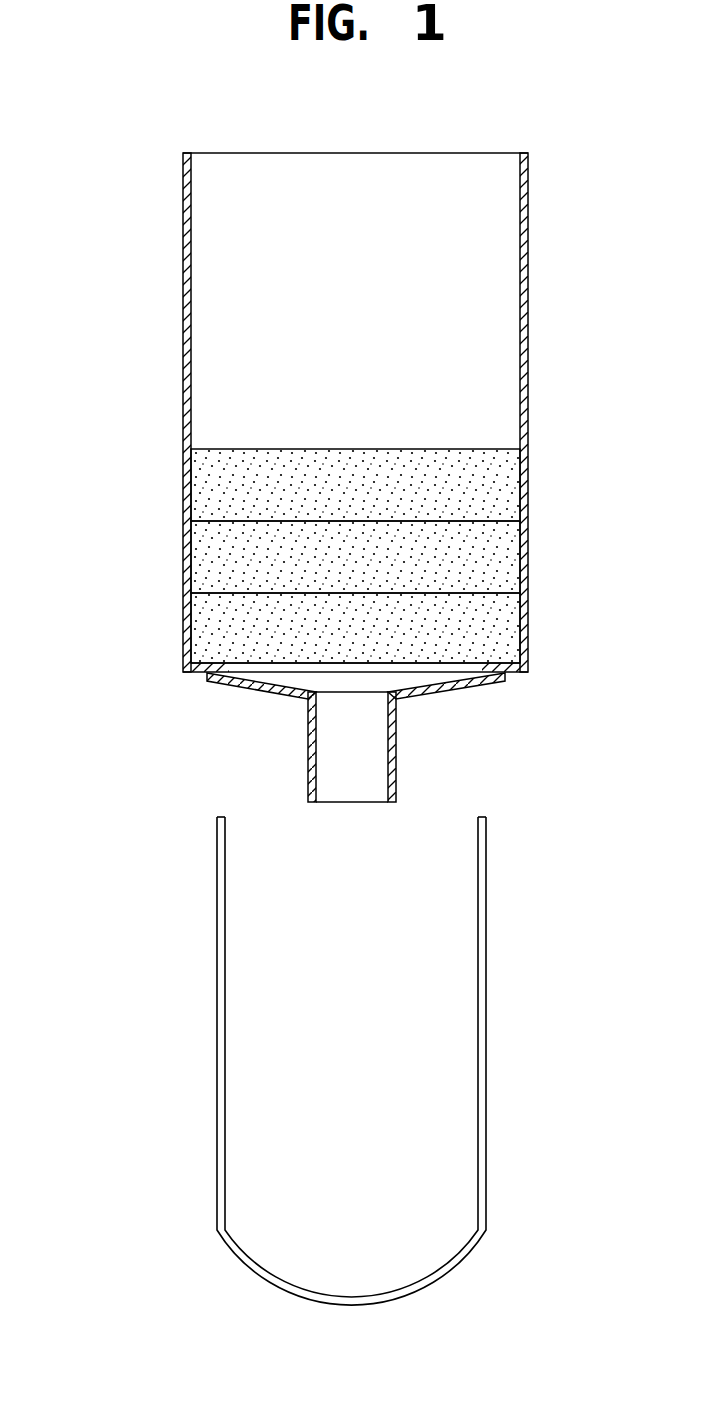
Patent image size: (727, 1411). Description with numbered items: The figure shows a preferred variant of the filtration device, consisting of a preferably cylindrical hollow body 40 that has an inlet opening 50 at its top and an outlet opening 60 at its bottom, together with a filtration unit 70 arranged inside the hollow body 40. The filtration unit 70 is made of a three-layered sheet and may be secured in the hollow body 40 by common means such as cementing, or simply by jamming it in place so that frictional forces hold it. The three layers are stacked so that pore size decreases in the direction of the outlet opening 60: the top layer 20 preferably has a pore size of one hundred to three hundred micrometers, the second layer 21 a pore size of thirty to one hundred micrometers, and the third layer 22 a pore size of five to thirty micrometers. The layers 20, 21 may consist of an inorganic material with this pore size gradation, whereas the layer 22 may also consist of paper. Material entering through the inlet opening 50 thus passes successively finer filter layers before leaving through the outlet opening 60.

The hollow body 40 is at (183, 233).
The inlet opening 50 is at (382, 180).
The top layer 20 is at (210, 485).
The second layer 21 is at (210, 557).
The third layer 22 is at (210, 627).
The filtration unit 70 is at (337, 560).
The outlet opening 60 is at (340, 750).